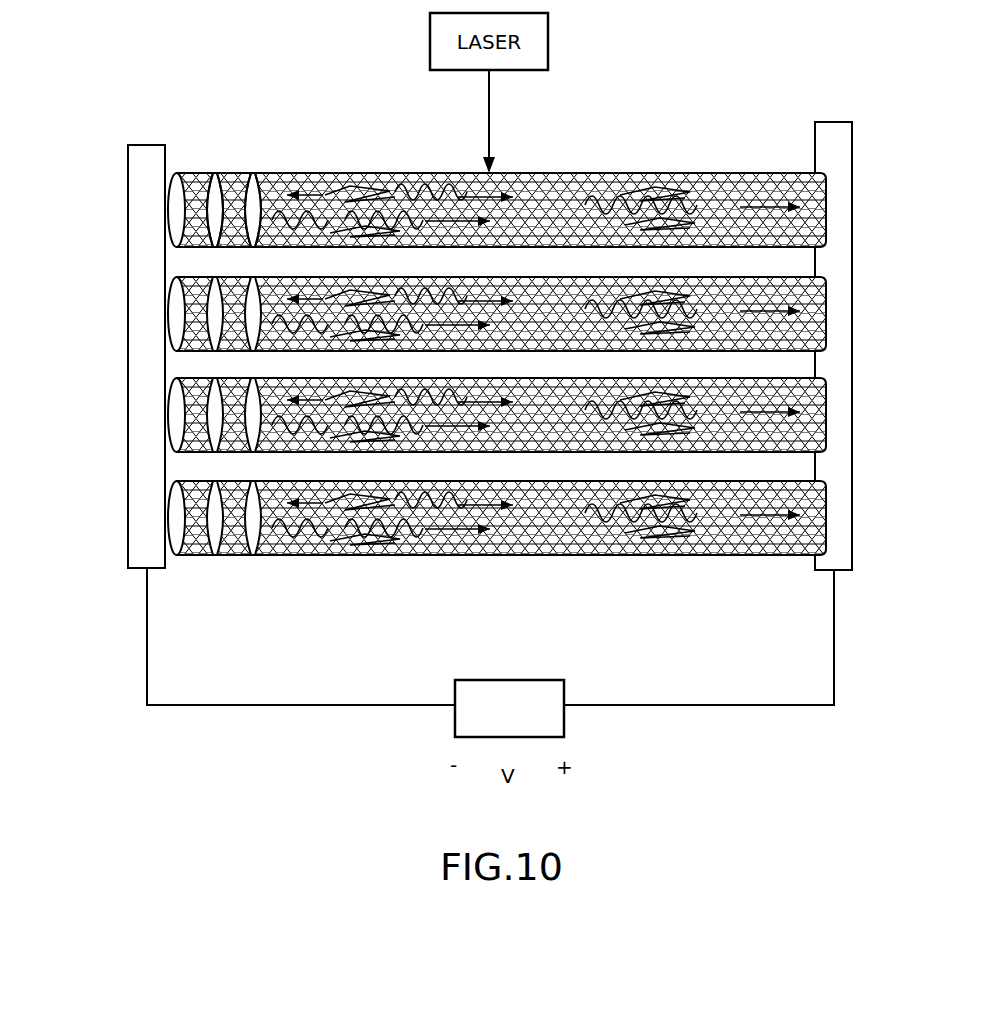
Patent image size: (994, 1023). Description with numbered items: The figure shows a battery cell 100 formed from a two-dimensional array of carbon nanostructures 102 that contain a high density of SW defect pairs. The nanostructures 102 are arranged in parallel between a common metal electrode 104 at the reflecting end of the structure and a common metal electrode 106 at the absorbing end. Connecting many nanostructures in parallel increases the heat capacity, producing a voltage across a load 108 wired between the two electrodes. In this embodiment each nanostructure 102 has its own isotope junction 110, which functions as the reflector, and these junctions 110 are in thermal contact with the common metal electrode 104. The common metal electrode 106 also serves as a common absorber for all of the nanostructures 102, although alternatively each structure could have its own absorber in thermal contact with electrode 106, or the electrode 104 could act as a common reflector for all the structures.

The battery cell 100 is at (104, 140).
The carbon nanostructure 102 is at (680, 183).
The common metal electrode 104 is at (128, 487).
The common metal electrode 106 is at (852, 511).
The load 108 is at (513, 680).
The isotope junction 110 is at (216, 178).